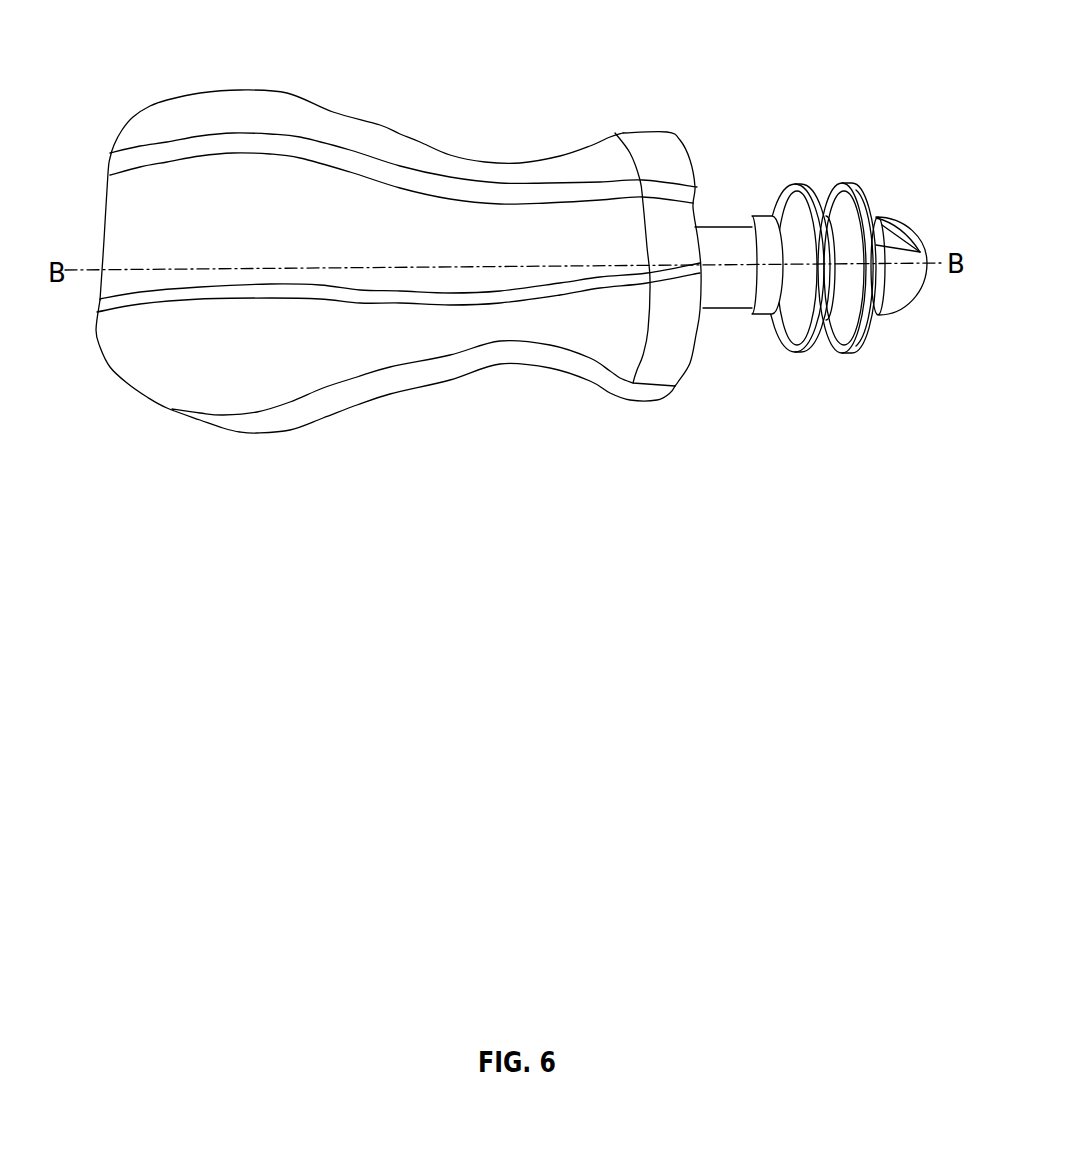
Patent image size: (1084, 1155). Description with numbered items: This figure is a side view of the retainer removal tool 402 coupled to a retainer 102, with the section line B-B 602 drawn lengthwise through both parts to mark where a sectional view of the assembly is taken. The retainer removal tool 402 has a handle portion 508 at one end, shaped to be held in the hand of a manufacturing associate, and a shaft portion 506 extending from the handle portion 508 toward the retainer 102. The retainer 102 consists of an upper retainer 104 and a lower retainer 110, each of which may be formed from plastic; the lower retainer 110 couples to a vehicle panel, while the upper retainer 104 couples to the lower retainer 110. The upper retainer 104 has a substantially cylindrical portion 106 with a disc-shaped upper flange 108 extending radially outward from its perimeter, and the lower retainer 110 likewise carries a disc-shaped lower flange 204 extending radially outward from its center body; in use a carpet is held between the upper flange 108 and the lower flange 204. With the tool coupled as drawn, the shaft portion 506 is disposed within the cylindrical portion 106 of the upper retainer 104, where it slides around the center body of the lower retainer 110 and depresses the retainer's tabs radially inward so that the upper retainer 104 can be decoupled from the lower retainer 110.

The retainer removal tool 402 is at (160, 90).
The handle portion 508 is at (383, 217).
The line B-B 602 is at (183, 270).
The shaft portion 506 is at (728, 238).
The retainer 102 is at (818, 266).
The upper retainer 104 is at (790, 216).
The cylindrical portion 106 is at (783, 310).
The upper flange 108 is at (793, 327).
The lower retainer 110 is at (837, 238).
The lower flange 204 is at (842, 312).